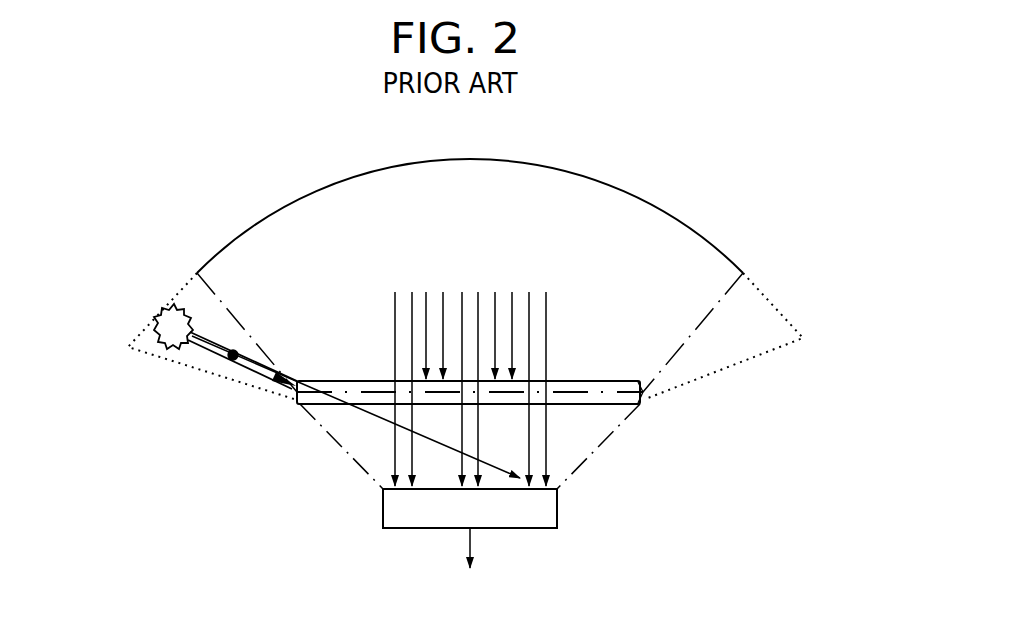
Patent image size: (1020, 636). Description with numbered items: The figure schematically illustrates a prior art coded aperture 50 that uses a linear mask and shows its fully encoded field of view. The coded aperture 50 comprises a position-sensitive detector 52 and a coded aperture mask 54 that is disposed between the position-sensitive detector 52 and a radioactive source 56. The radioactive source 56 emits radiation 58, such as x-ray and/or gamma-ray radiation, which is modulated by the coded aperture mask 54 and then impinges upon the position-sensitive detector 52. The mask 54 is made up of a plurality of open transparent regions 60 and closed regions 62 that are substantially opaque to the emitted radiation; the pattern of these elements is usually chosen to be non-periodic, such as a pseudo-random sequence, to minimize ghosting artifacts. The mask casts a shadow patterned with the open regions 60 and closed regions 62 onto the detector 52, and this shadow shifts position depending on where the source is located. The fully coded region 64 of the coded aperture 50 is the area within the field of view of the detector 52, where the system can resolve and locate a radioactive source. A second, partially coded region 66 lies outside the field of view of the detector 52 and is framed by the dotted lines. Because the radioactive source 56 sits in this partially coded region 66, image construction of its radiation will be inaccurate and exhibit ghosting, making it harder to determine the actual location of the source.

The coded aperture 50 is at (201, 186).
The position-sensitive detector 52 is at (383, 507).
The coded aperture mask 54 is at (630, 403).
The radioactive source 56 is at (148, 318).
The radiation 58 is at (203, 332).
The open transparent regions 60 is at (588, 396).
The closed regions 62 is at (567, 392).
The fully coded region 64 is at (617, 213).
The partially coded region 66 is at (232, 360).